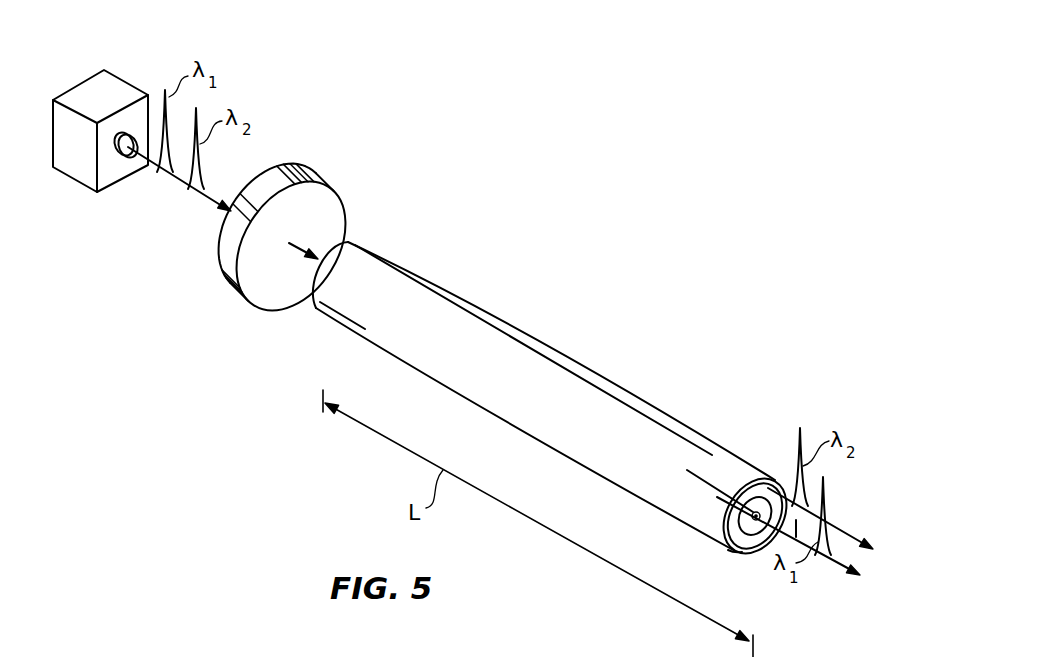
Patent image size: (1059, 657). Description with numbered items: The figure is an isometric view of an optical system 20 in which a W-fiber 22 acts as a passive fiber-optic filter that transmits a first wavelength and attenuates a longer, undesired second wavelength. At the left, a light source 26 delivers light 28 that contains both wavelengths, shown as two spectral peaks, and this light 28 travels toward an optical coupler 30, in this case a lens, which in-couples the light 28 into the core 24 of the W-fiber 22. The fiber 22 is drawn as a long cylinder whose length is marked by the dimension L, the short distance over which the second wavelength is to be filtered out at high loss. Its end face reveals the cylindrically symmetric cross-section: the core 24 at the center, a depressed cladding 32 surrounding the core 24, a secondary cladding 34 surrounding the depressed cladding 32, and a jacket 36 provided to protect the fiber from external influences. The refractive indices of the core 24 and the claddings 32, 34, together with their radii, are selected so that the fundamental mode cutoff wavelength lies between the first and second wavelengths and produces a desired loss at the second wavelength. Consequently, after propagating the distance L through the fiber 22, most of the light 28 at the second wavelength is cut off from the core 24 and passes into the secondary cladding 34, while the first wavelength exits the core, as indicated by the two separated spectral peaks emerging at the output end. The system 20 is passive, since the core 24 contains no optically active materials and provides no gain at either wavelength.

The optical system 20 is at (582, 178).
The W-fiber 22 is at (688, 425).
The core 24 is at (727, 522).
The light source 26 is at (127, 82).
The light 28 is at (177, 178).
The optical coupler 30 is at (317, 172).
The depressed cladding 32 is at (735, 485).
The secondary cladding 34 is at (728, 553).
The jacket 36 is at (750, 554).